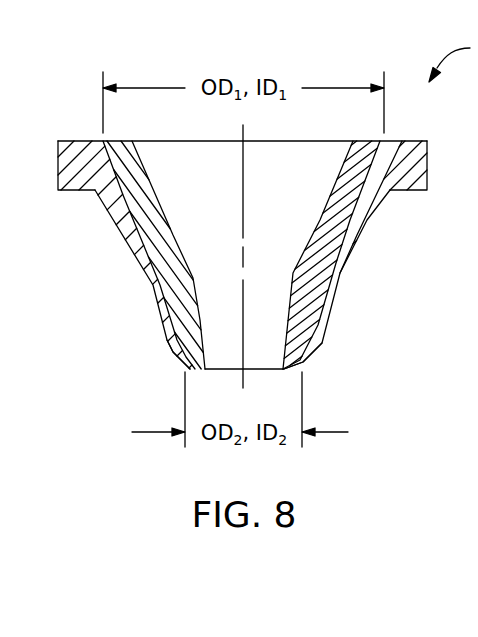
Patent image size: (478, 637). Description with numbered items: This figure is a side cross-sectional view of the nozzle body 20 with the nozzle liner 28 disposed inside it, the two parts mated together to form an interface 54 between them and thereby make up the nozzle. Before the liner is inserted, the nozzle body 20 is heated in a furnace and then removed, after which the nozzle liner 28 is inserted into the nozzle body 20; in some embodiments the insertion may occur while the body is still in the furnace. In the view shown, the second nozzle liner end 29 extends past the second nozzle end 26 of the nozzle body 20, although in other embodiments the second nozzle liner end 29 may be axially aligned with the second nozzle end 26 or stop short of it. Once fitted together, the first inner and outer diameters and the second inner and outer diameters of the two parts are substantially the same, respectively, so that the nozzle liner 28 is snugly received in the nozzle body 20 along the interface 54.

The nozzle body 20 is at (318, 323).
The second nozzle end 26 is at (173, 345).
The nozzle liner 28 is at (328, 253).
The second nozzle liner end 29 is at (287, 371).
The interface 54 is at (138, 247).